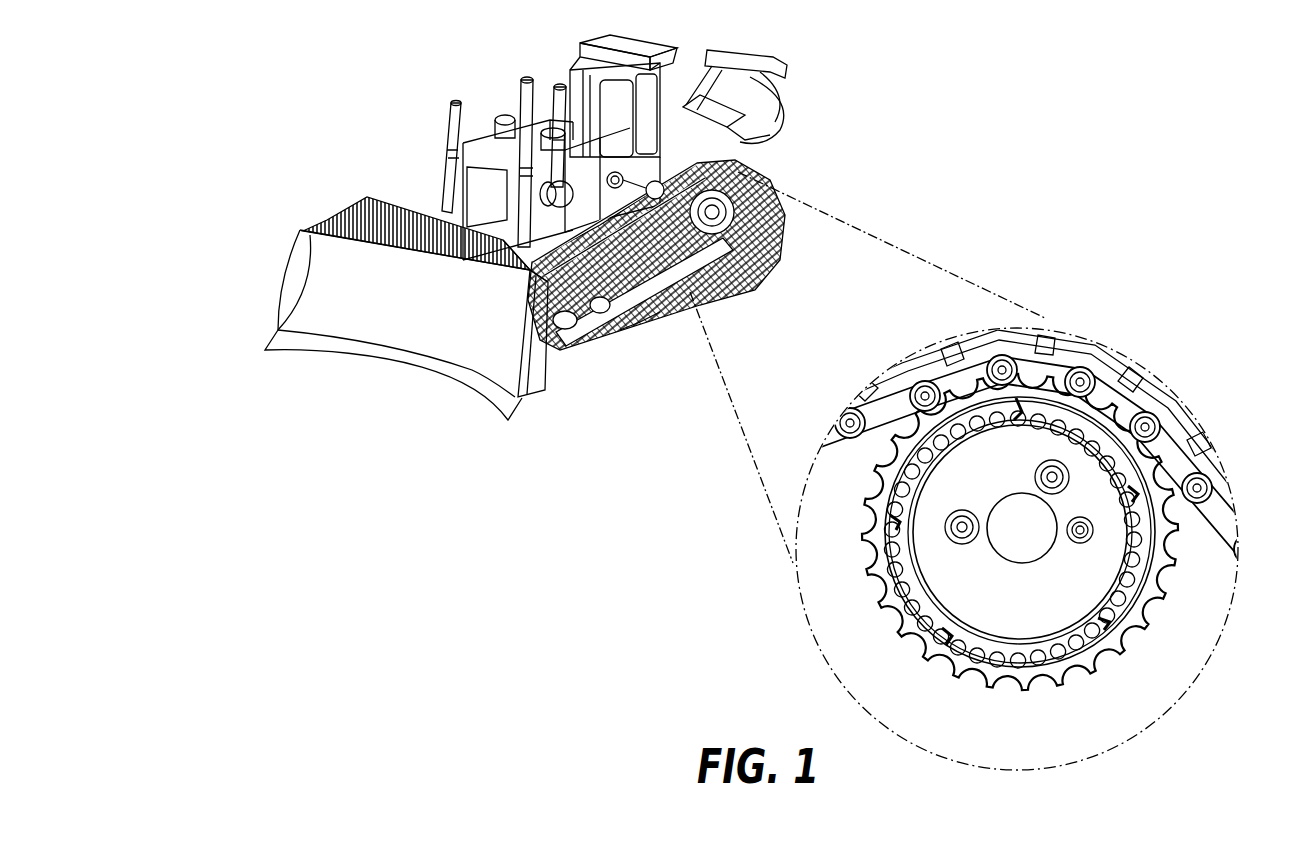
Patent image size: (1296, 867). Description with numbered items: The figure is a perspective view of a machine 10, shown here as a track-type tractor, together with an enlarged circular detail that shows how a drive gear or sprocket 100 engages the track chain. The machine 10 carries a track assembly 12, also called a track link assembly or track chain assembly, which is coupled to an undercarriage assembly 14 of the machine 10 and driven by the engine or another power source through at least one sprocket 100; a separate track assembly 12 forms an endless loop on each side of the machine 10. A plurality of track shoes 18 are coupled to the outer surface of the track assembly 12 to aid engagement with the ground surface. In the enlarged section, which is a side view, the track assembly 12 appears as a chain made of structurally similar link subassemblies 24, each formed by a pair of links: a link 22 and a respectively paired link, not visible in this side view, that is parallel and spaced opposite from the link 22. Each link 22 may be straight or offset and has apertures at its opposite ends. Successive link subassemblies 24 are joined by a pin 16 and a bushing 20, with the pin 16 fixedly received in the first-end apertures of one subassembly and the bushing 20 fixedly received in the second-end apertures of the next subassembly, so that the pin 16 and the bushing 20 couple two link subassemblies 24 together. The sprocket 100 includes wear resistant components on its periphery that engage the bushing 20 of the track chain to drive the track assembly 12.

The machine 10 is at (341, 108).
The track assembly 12 is at (772, 208).
The undercarriage assembly 14 is at (786, 237).
The pin 16 is at (1000, 365).
The track shoe 18 is at (918, 349).
The bushing 20 is at (977, 360).
The link 22 is at (937, 360).
The link subassembly 24 is at (1170, 396).
The sprocket 100 is at (1082, 380).